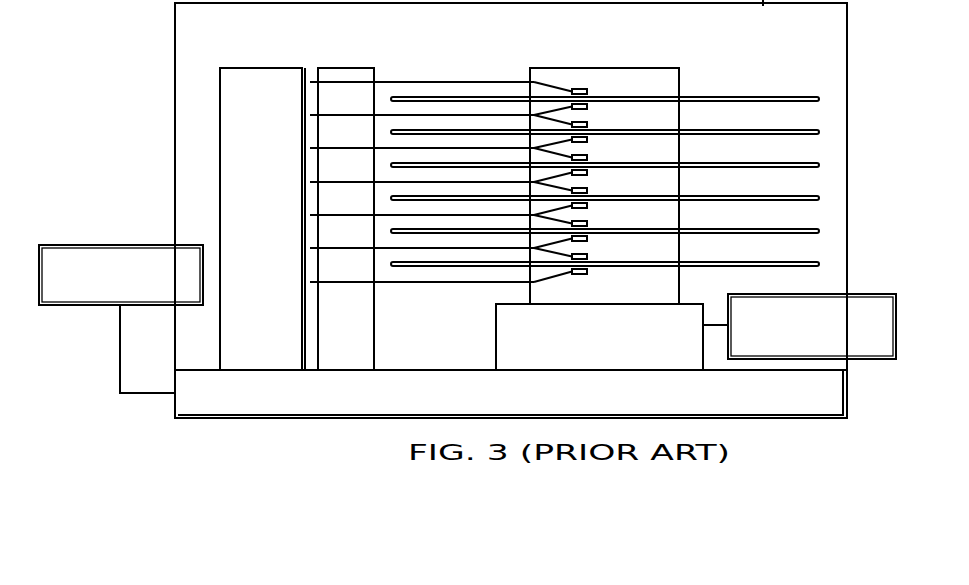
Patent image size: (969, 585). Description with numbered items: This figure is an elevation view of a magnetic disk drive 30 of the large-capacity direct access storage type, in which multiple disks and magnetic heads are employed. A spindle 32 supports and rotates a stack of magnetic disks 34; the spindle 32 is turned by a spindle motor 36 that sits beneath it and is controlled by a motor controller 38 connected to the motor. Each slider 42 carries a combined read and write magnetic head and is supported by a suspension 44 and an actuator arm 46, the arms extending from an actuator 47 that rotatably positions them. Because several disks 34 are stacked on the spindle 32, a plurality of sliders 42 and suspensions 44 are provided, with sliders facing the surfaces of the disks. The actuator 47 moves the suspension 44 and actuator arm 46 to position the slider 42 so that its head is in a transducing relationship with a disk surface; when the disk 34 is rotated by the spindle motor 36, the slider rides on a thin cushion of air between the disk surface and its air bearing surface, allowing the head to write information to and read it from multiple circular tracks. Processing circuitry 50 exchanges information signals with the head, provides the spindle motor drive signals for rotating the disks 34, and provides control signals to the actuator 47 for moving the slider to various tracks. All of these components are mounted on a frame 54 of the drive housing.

The magnetic disk drive 30 is at (745, 55).
The spindle 32 is at (655, 68).
The magnetic disk 34 is at (795, 101).
The spindle motor 36 is at (620, 350).
The motor controller 38 is at (880, 359).
The slider 42 is at (578, 122).
The suspension 44 is at (578, 121).
The actuator arm 46 is at (482, 115).
The actuator 47 is at (258, 68).
The processing circuitry 50 is at (100, 245).
The frame 54 is at (296, 418).